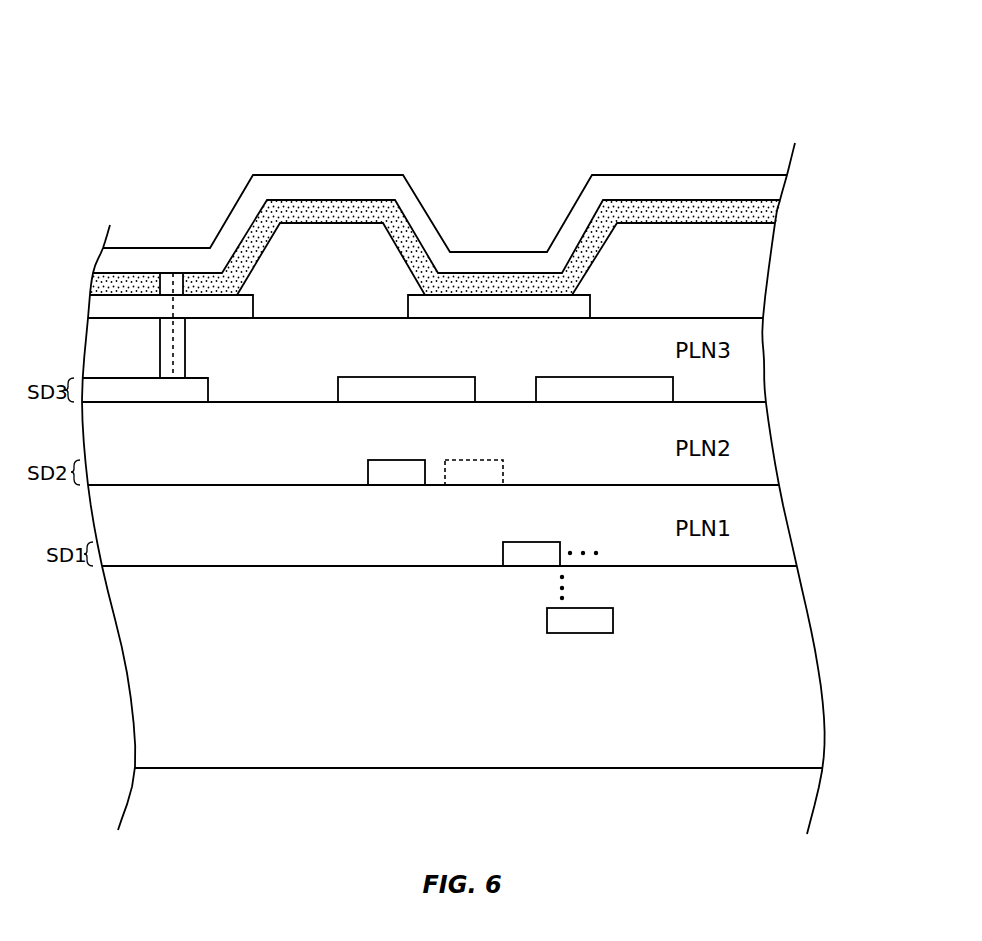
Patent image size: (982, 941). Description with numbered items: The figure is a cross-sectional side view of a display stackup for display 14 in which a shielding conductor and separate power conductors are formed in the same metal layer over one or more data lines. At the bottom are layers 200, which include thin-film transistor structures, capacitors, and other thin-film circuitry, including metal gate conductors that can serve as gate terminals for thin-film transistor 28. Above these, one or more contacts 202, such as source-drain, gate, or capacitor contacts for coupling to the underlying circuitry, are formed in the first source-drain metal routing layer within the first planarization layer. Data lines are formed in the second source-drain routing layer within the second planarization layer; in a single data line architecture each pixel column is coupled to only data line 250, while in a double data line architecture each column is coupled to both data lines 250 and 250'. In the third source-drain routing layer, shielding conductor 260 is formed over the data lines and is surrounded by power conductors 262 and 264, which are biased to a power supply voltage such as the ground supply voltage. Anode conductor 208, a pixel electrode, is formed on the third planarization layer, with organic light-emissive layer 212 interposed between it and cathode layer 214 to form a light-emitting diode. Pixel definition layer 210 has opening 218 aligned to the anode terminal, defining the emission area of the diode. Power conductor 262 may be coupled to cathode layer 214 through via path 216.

The display 14 is at (688, 77).
The opening 218 is at (590, 166).
The cathode layer 214 is at (768, 186).
The organic light-emissive layer 212 is at (773, 210).
The pixel definition layer 210 is at (316, 278).
The anode conductor 208 is at (580, 303).
The via path 216 is at (173, 306).
The power conductor 264 is at (204, 388).
The shielding conductor 260 is at (347, 383).
The power conductor 262 is at (537, 380).
The data line 250 is at (355, 463).
The data line 250' is at (517, 466).
The contact 202 is at (543, 541).
The thin-film transistor 28 is at (622, 608).
The layers 200 is at (126, 675).